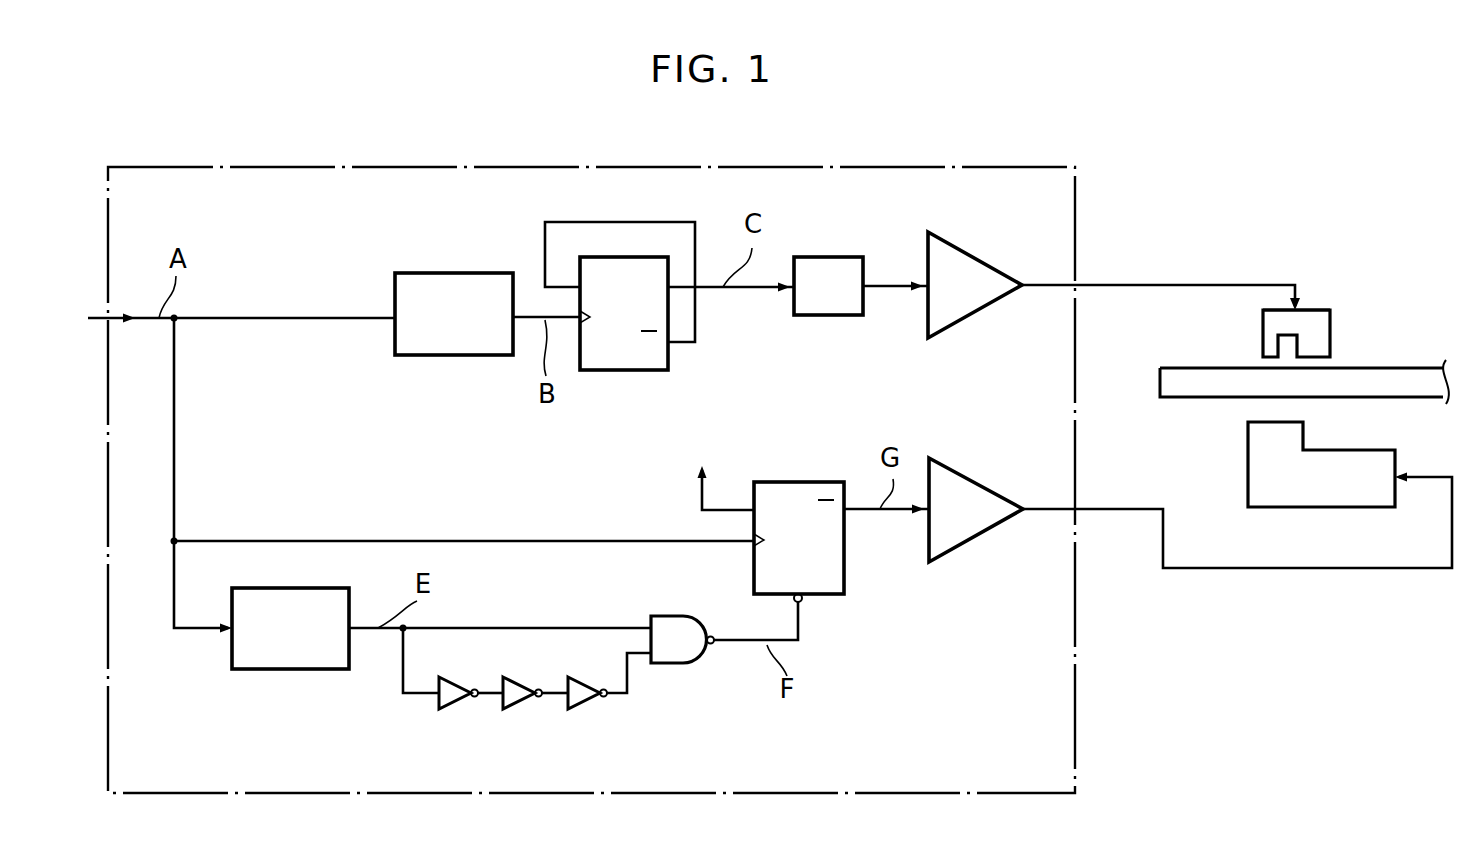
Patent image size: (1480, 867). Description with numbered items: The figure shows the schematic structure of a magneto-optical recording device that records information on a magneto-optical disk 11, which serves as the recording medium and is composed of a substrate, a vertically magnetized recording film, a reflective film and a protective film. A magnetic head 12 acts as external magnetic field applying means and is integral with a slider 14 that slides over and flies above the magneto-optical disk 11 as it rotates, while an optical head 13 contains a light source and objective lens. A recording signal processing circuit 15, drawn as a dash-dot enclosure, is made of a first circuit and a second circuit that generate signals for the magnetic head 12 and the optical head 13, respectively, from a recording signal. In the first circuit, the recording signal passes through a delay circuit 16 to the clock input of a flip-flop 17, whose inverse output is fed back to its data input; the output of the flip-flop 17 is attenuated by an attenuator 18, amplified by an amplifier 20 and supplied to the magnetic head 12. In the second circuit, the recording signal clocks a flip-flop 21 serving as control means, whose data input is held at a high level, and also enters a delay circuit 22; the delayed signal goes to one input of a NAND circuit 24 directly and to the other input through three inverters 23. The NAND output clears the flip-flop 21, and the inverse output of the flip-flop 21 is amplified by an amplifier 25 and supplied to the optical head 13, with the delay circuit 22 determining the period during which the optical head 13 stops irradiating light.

The magneto-optical disk 11 is at (1160, 386).
The magnetic head 12 is at (1263, 331).
The optical head 13 is at (1248, 459).
The slider 14 is at (1313, 310).
The recording signal processing circuit 15 is at (484, 163).
The delay circuit 16 is at (437, 273).
The flip-flop 17 is at (625, 372).
The attenuator 18 is at (828, 257).
The amplifier 20 is at (965, 246).
The flip-flop 21 is at (800, 482).
The delay circuit 22 is at (292, 669).
The inverters 23 is at (455, 705).
The NAND circuit 24 is at (672, 663).
The amplifier 25 is at (975, 477).